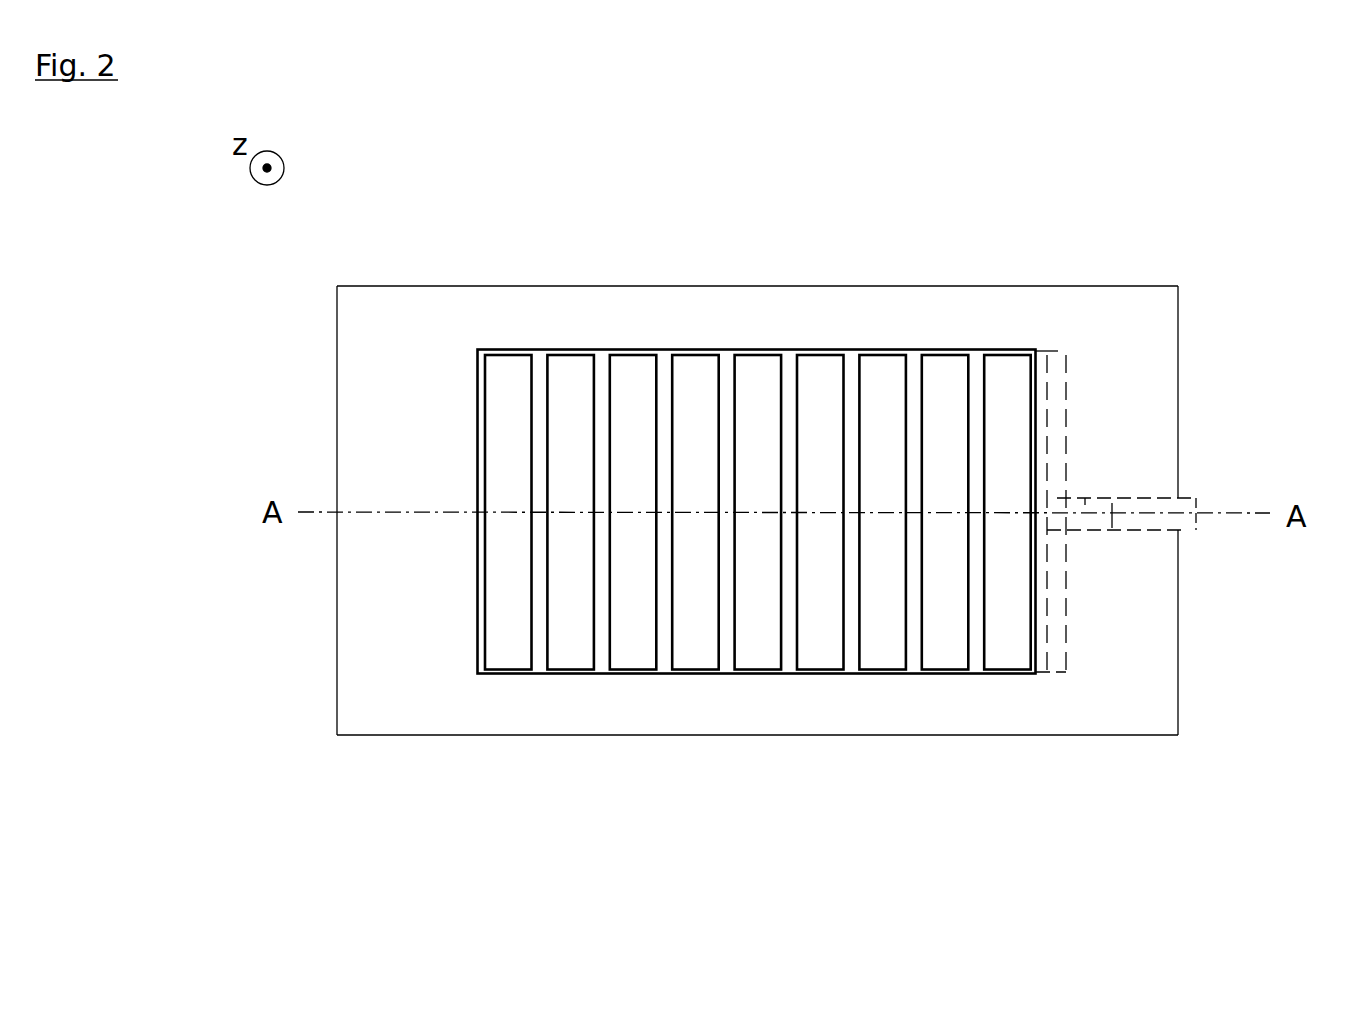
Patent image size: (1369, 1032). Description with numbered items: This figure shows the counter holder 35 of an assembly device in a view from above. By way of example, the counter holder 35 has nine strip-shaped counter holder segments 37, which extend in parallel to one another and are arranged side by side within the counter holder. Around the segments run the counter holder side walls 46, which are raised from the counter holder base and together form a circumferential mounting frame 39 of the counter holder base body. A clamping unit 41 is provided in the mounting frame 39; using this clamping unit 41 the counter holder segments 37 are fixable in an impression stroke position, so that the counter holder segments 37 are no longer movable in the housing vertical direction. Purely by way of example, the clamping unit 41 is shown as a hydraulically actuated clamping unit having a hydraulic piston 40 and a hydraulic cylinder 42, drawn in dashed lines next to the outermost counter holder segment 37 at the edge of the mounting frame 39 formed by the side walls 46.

The counter holder 35 is at (506, 259).
The counter holder segments 37 is at (815, 657).
The mounting frame 39 is at (350, 845).
The hydraulic piston 40 is at (1047, 453).
The clamping unit 41 is at (1202, 511).
The hydraulic cylinder 42 is at (1196, 496).
The counter holder side walls 46 is at (783, 312).